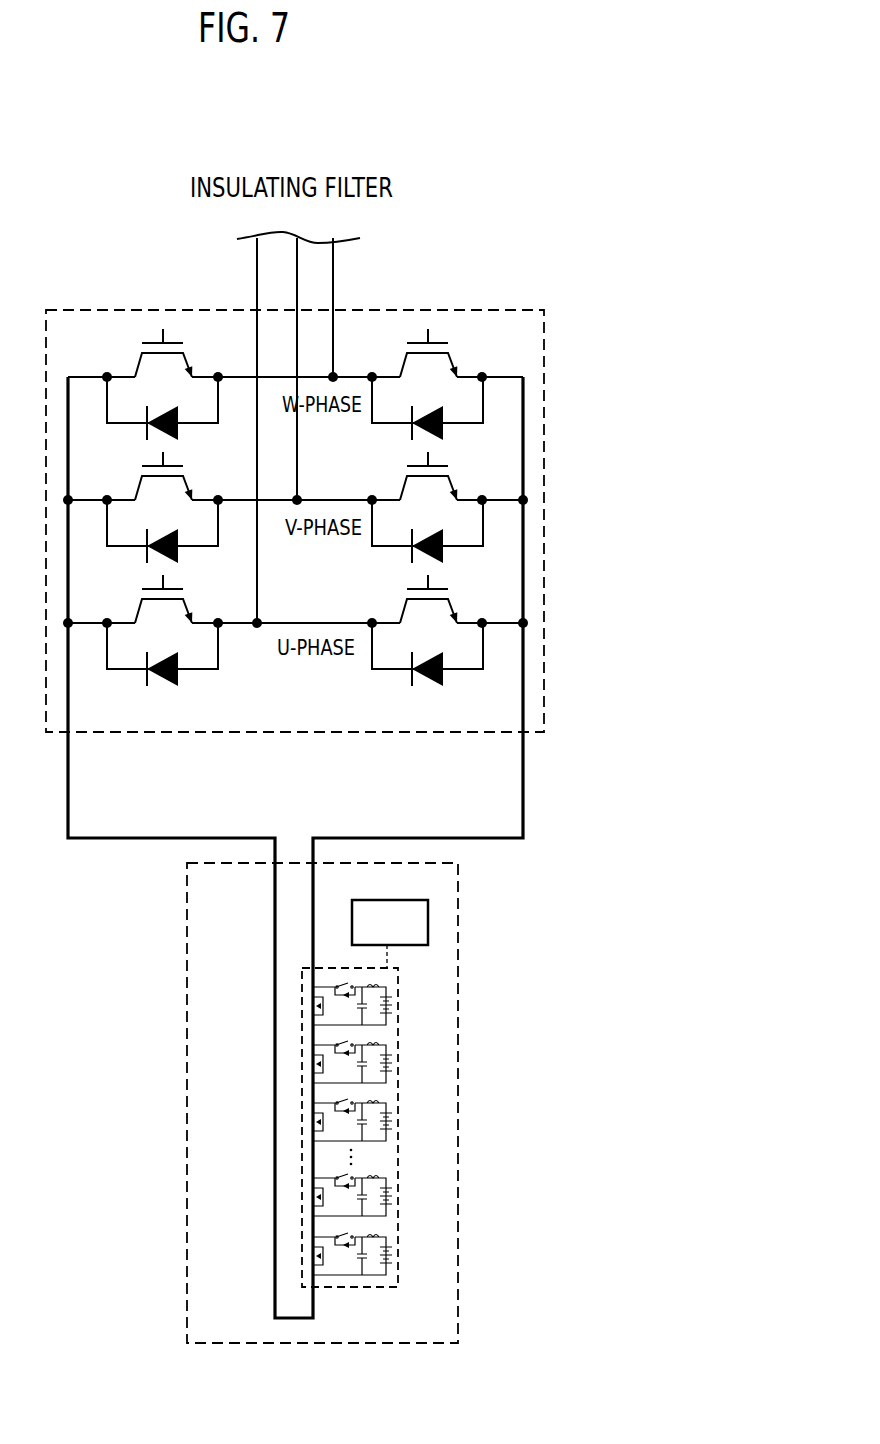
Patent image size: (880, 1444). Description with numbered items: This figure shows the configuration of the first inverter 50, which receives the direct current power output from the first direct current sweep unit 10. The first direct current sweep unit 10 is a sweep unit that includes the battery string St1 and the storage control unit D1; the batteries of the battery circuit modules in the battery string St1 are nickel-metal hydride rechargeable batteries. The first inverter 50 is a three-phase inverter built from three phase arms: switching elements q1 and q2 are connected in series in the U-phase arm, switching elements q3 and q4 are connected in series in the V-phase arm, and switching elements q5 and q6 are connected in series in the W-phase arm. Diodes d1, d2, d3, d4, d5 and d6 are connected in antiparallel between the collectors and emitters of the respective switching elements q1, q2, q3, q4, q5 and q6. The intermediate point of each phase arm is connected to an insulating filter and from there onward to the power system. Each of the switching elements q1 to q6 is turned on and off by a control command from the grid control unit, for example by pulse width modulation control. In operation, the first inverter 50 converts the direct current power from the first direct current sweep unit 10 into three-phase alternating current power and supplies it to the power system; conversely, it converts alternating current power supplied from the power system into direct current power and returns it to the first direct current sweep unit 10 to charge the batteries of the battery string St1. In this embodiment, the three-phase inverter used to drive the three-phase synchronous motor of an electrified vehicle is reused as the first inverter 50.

The first inverter 50 is at (493, 310).
The first direct current sweep unit 10 is at (458, 1037).
The SCU D1 is at (410, 900).
The battery string St1 is at (338, 1287).
The switching element q1 is at (144, 599).
The switching element q2 is at (410, 599).
The switching element q3 is at (144, 476).
The switching element q4 is at (410, 476).
The switching element q5 is at (145, 353).
The switching element q6 is at (410, 353).
The diode d1 is at (162, 666).
The diode d2 is at (427, 666).
The diode d3 is at (163, 544).
The diode d4 is at (429, 544).
The diode d5 is at (163, 421).
The diode d6 is at (429, 421).